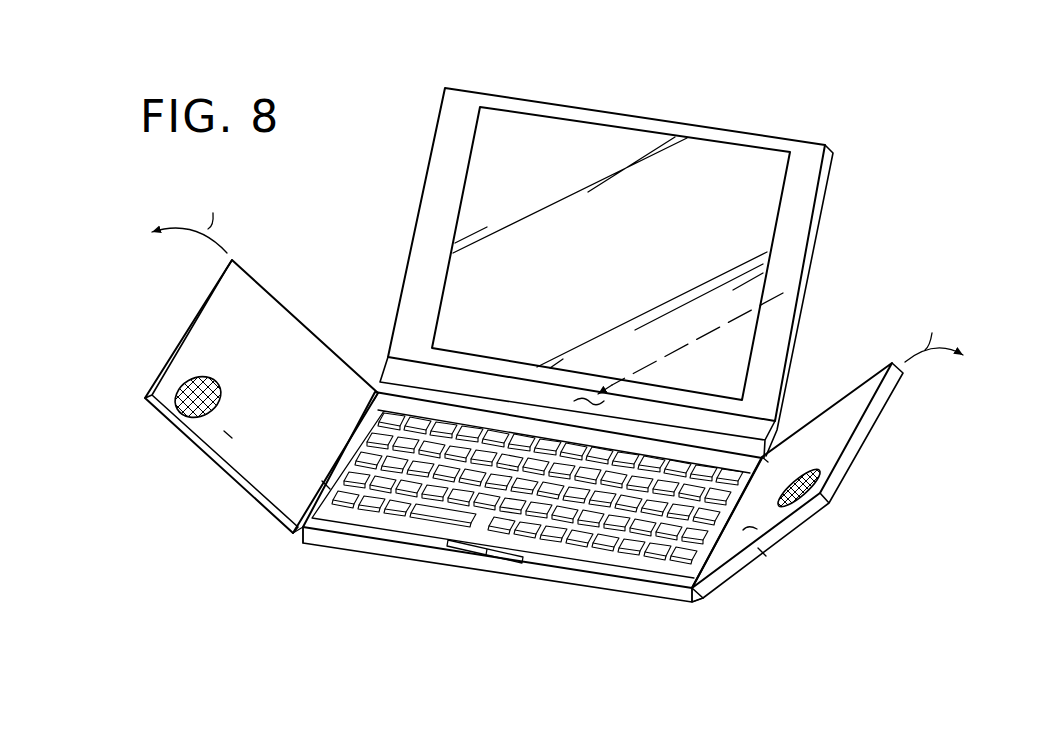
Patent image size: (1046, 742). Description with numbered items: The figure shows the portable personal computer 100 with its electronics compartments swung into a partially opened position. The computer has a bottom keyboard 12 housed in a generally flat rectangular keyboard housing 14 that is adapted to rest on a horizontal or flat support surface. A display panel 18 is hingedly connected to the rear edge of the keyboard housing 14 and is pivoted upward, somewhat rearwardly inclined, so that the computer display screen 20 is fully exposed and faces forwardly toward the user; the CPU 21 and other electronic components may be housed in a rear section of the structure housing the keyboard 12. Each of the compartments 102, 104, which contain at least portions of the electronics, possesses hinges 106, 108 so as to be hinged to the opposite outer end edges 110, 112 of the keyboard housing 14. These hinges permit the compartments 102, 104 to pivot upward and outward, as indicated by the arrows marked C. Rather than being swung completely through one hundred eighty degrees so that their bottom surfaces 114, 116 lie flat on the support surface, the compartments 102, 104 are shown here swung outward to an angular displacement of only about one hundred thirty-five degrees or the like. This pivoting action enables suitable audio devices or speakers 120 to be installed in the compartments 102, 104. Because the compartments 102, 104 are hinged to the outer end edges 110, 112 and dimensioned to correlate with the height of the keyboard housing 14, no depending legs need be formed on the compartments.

The computer 100 is at (703, 104).
The display panel 18 is at (820, 235).
The computer display screen 20 is at (612, 278).
The CPU 21 is at (783, 293).
The keyboard housing 14 is at (383, 545).
The bottom keyboard 12 is at (568, 545).
The compartment 102 is at (282, 337).
The compartment 104 is at (812, 522).
The hinge 106 is at (325, 485).
The hinge 108 is at (352, 428).
The outer end edge 110 is at (297, 542).
The outer end edge 112 is at (693, 598).
The bottom surface 114 is at (228, 435).
The bottom surface 116 is at (762, 552).
The speakers 120 is at (183, 382).